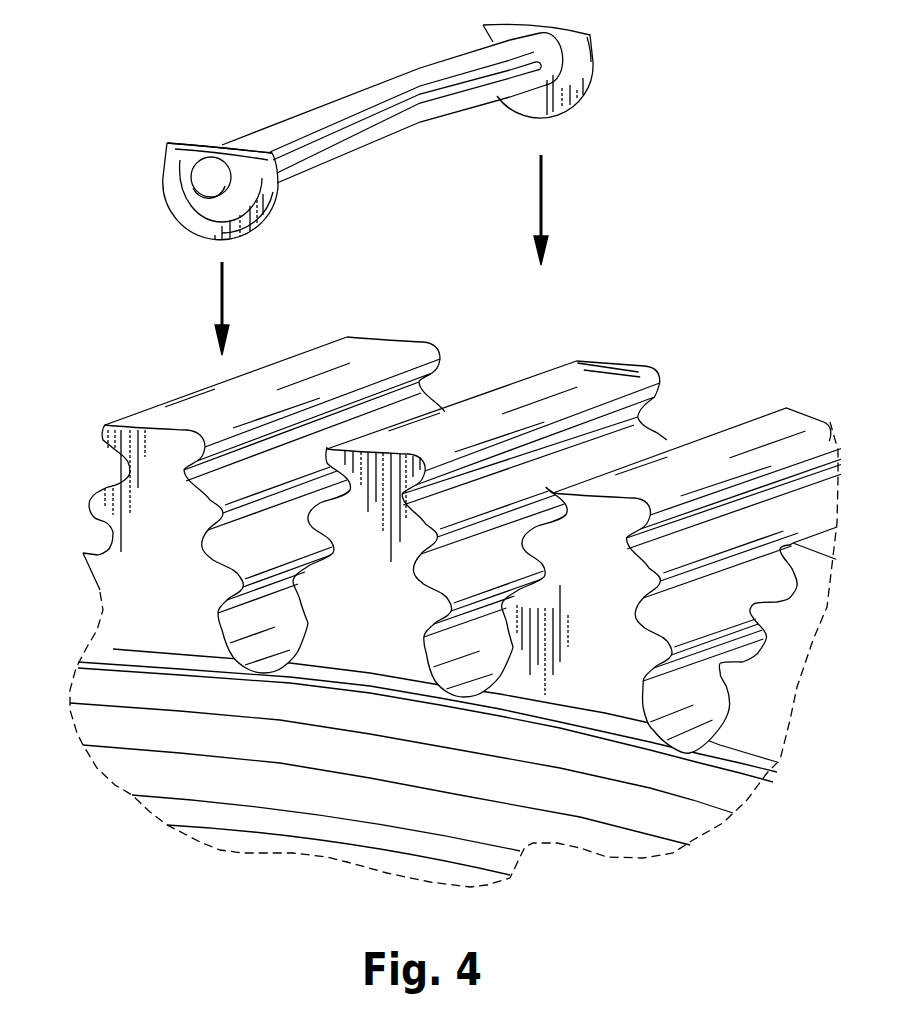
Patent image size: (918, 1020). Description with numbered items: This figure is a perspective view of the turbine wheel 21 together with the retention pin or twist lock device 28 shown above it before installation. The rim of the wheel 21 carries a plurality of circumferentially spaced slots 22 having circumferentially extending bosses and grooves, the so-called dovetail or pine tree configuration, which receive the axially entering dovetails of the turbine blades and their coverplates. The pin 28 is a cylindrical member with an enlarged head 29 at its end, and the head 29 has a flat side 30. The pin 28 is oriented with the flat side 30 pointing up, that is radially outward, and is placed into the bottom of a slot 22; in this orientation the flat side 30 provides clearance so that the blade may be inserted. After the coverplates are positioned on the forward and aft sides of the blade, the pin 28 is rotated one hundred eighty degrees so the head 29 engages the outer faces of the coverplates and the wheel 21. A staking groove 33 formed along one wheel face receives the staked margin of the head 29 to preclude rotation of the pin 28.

The turbine wheel 21 is at (433, 680).
The slots 22 is at (513, 497).
The retention pin 28 is at (366, 132).
The head 29 is at (180, 203).
The flat side 30 is at (198, 145).
The staking groove 33 is at (112, 657).